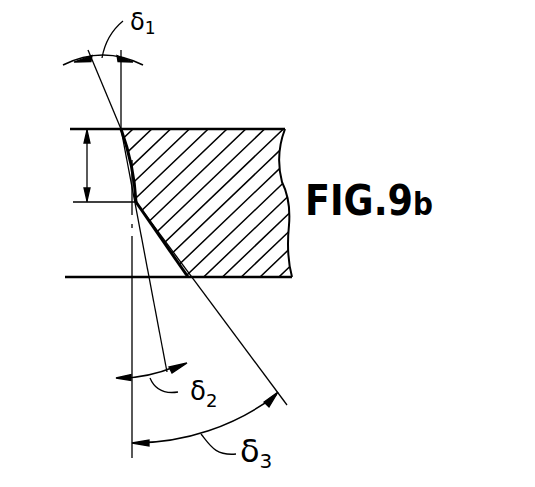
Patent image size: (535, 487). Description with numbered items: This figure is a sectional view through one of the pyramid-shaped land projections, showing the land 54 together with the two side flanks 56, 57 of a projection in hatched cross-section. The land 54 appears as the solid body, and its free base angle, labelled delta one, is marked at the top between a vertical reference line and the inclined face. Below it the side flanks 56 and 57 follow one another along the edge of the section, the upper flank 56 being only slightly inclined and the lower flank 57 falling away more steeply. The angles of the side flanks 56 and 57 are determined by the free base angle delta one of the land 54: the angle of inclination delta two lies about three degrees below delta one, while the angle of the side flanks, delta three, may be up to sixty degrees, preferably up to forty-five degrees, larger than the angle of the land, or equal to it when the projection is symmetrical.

The land 54 is at (178, 262).
The side flank 56 is at (130, 158).
The side flank 57 is at (160, 238).